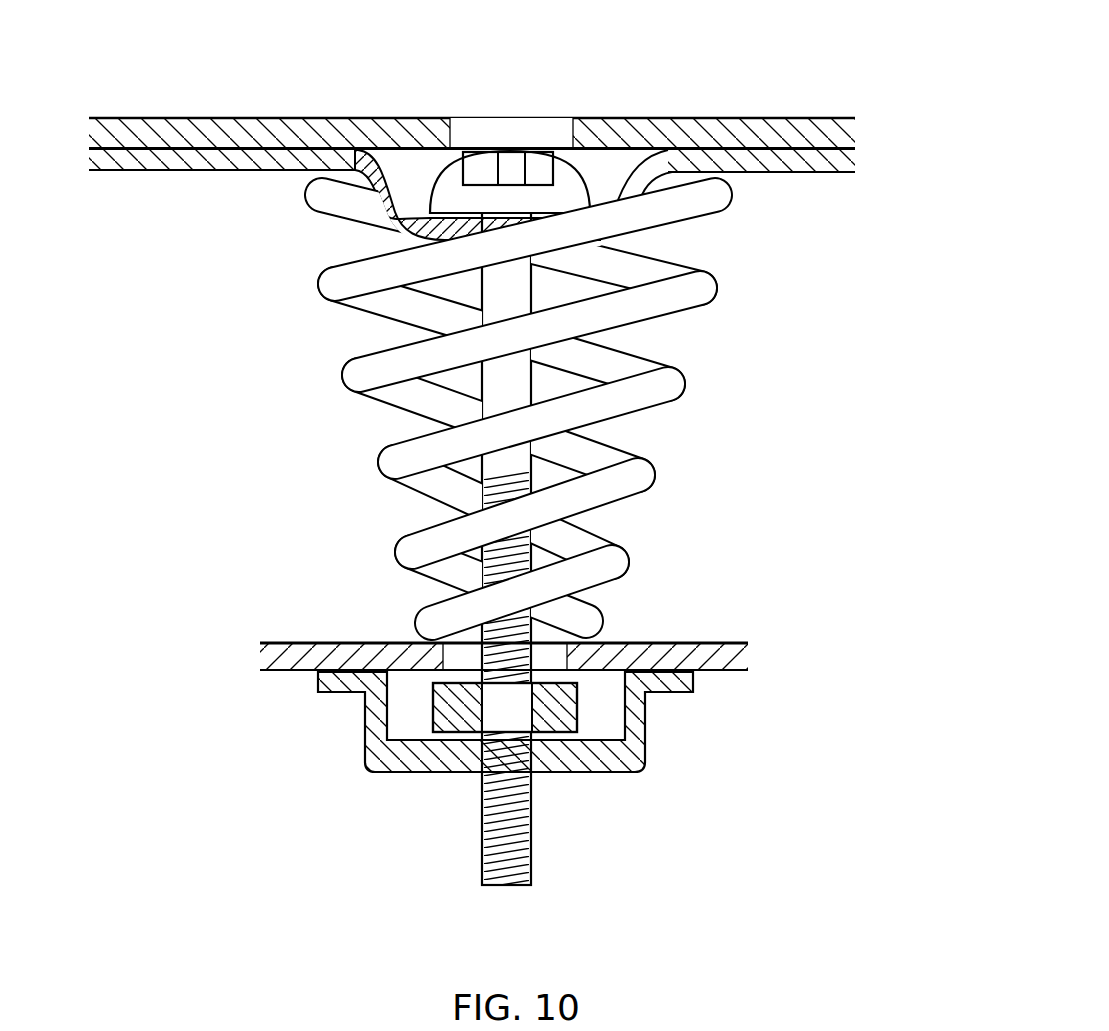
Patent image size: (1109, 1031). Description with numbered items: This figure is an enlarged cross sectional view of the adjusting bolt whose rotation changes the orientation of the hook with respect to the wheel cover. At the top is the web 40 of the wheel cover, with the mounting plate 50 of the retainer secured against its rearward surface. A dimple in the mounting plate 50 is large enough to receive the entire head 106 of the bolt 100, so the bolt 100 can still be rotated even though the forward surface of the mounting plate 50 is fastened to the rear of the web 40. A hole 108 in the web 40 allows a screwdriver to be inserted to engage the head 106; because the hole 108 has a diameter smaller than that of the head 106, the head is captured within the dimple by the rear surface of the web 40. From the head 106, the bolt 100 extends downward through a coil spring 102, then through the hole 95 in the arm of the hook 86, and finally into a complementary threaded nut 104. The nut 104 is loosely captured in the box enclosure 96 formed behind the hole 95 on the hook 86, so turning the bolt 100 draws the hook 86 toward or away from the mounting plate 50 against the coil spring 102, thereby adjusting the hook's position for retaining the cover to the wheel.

The web 40 is at (255, 117).
The mounting plate 50 is at (208, 181).
The hole 108 is at (470, 118).
The head 106 is at (628, 120).
The coil spring 102 is at (485, 416).
The hole 95 is at (572, 638).
The hook 86 is at (268, 675).
The box enclosure 96 is at (368, 742).
The threaded nut 104 is at (585, 705).
The bolt 100 is at (537, 825).